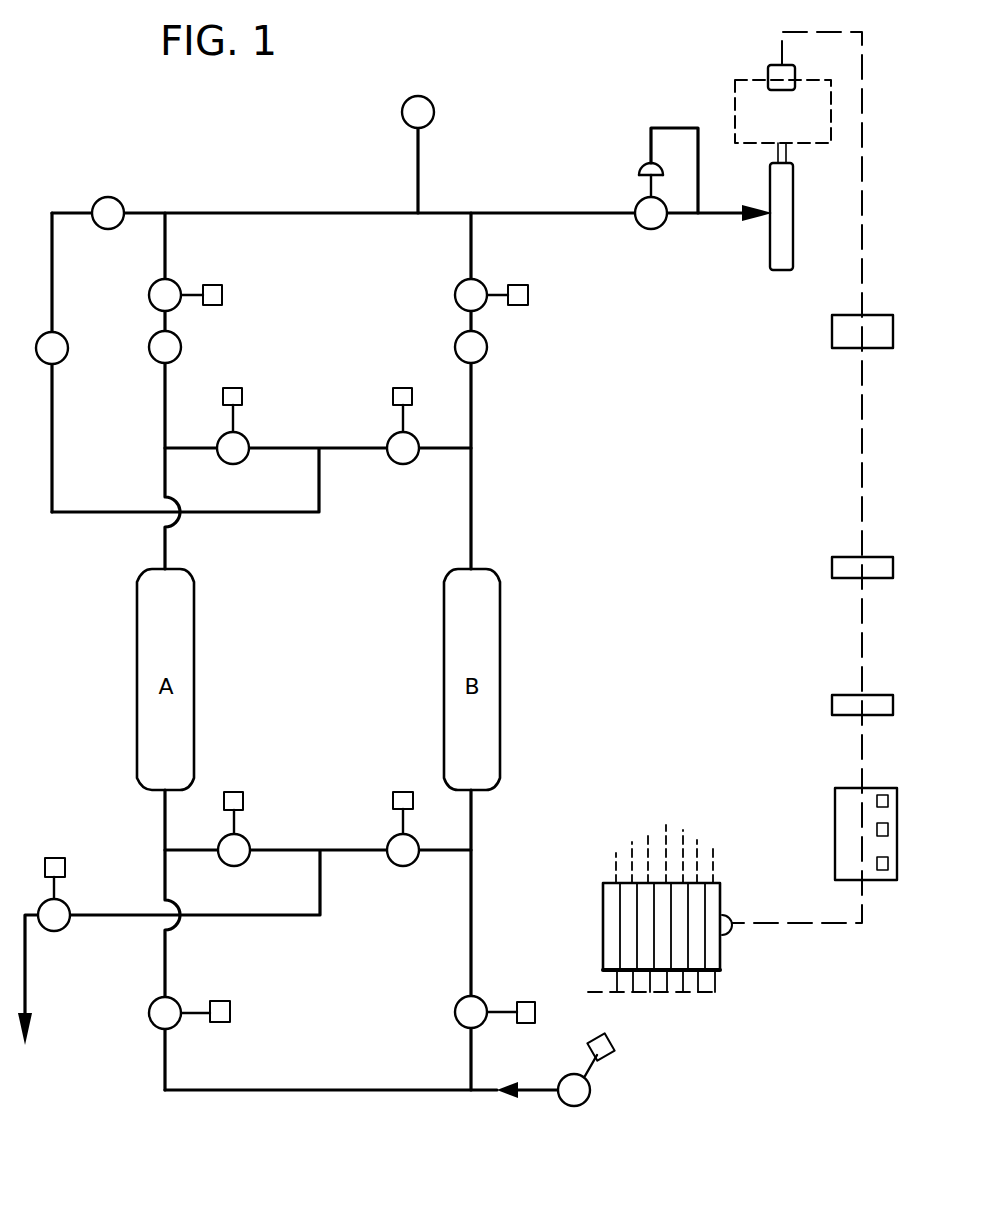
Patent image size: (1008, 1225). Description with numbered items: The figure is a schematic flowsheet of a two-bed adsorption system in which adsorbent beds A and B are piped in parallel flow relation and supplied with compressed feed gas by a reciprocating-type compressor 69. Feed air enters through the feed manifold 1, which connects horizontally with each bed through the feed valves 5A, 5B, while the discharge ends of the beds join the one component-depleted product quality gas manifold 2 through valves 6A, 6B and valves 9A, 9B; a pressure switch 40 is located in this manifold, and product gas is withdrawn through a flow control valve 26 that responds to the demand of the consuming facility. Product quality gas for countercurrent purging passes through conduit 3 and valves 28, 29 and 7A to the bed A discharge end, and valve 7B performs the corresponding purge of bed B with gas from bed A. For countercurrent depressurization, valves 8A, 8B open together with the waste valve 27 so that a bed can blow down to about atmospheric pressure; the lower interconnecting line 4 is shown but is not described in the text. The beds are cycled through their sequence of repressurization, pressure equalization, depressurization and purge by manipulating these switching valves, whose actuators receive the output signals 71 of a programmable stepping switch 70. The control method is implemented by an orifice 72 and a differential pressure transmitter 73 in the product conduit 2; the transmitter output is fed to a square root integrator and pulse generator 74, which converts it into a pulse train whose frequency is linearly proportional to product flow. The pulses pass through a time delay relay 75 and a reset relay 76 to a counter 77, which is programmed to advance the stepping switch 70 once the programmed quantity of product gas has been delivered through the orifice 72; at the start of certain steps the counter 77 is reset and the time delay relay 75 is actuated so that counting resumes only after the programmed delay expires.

The feed manifold 1 is at (353, 1093).
The product conduit 2 is at (312, 213).
The conduit 3 is at (277, 512).
The equalization line 4 is at (270, 917).
The valve 5A is at (150, 1016).
The valve 5B is at (457, 1023).
The valve 6A is at (149, 292).
The valve 6B is at (455, 297).
The valve 7A is at (231, 464).
The valve 7B is at (401, 463).
The valve 8A is at (238, 864).
The valve 8B is at (407, 866).
The valve 9A is at (149, 345).
The valve 9B is at (485, 352).
The flow control valve 26 is at (640, 228).
The waste valve 27 is at (62, 928).
The valve 28 is at (68, 357).
The valve 29 is at (113, 199).
The pressure switch 40 is at (432, 108).
The reciprocating-type compressor 69 is at (592, 1091).
The programmable stepping switch 70 is at (703, 970).
The output signals 71 is at (697, 843).
The orifice 72 is at (770, 238).
The differential pressure transmitter 73 is at (773, 70).
The square root integrator and pulse generator 74 is at (840, 328).
The time delay relay 75 is at (838, 567).
The reset relay 76 is at (838, 703).
The counter 77 is at (870, 873).